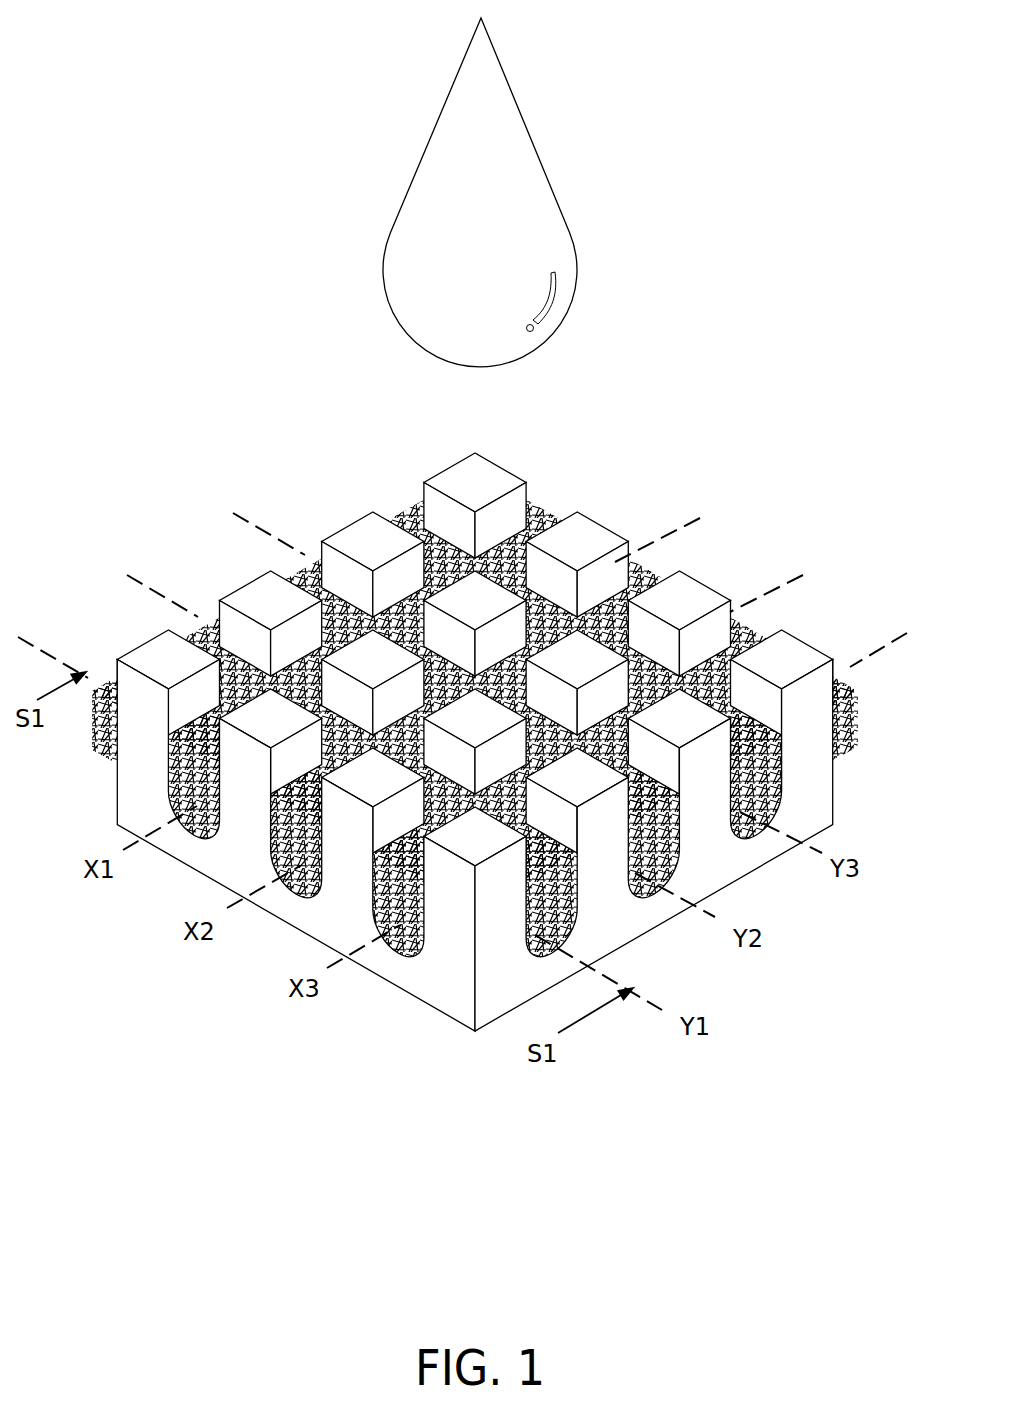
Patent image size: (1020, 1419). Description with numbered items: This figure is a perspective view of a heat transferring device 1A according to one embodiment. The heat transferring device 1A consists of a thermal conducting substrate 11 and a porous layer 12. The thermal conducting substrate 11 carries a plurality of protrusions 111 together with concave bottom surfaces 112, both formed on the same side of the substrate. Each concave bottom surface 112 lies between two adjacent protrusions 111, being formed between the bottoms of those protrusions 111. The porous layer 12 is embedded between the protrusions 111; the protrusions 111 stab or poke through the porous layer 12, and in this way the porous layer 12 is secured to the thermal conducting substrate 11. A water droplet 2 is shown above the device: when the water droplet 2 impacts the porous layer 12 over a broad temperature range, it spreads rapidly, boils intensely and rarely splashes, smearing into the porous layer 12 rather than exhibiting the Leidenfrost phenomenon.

The water droplet 2 is at (492, 257).
The heat transferring device 1A is at (117, 394).
The thermal conducting substrate 11 is at (433, 995).
The protrusions 111 is at (513, 500).
The concave bottom surfaces 112 is at (746, 828).
The porous layer 12 is at (650, 573).